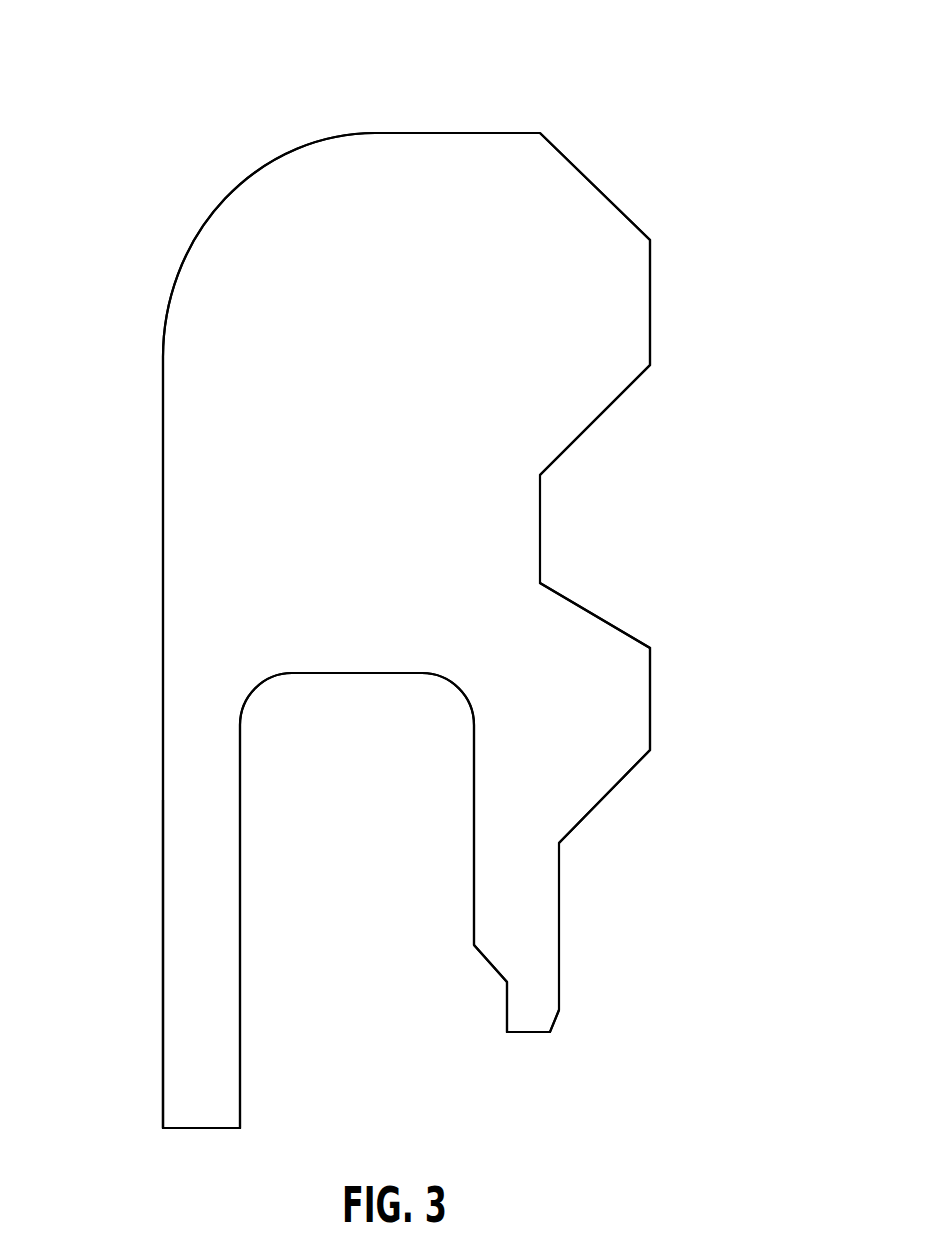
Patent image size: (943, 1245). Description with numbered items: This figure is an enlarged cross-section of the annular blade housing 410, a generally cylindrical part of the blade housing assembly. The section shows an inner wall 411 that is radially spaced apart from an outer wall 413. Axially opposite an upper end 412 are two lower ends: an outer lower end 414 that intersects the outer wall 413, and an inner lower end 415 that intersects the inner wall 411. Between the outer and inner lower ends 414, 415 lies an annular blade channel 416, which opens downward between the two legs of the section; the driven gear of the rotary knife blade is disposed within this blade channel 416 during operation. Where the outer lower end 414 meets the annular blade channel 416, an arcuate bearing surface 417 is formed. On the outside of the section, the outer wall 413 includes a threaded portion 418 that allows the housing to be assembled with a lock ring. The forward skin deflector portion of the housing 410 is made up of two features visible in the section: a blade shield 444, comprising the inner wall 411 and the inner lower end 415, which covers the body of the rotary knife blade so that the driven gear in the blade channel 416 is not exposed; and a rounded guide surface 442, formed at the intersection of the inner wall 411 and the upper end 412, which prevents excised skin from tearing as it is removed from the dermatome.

The annular blade housing 410 is at (634, 64).
The inner wall 411 is at (163, 535).
The upper end 412 is at (457, 133).
The outer wall 413 is at (648, 312).
The outer lower end 414 is at (535, 1032).
The inner lower end 415 is at (210, 1128).
The annular blade channel 416 is at (348, 1003).
The arcuate bearing surface 417 is at (505, 978).
The threaded portion 418 is at (652, 709).
The rounded guide surface 442 is at (228, 203).
The blade shield 444 is at (163, 950).